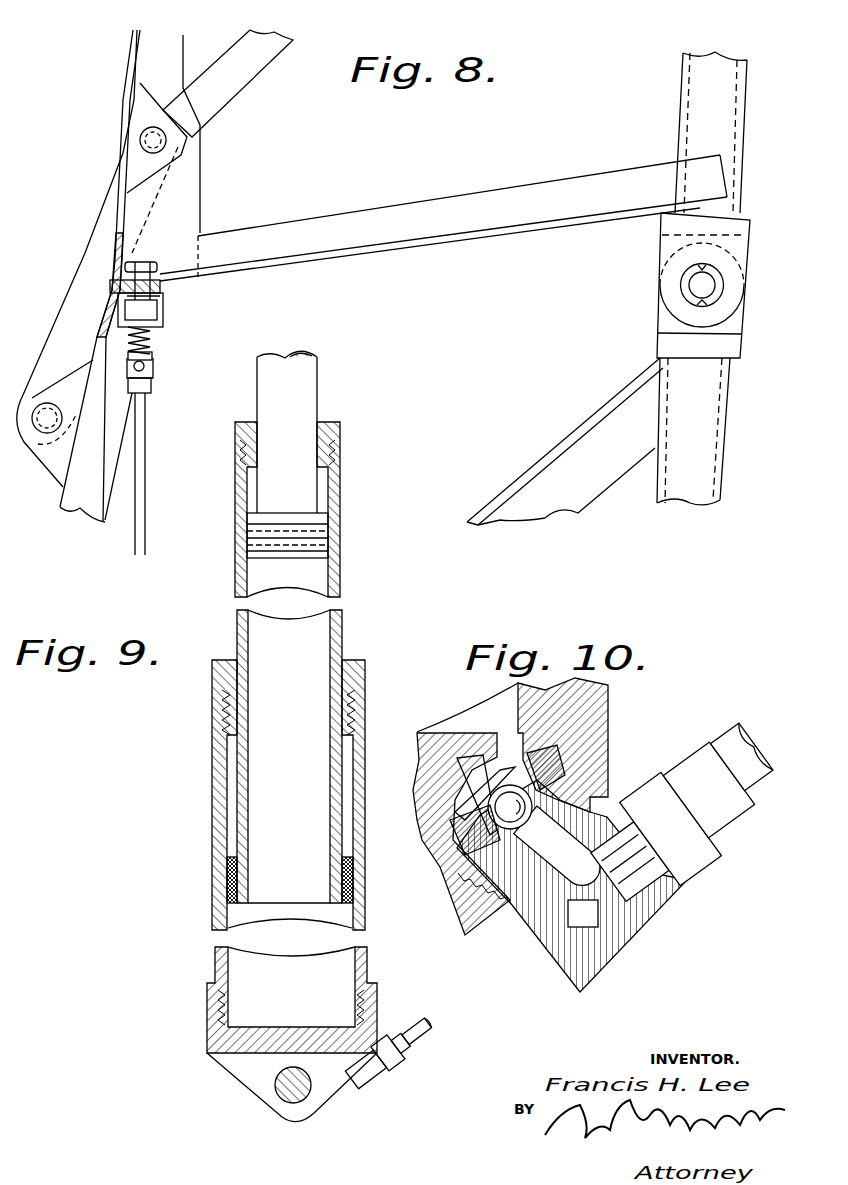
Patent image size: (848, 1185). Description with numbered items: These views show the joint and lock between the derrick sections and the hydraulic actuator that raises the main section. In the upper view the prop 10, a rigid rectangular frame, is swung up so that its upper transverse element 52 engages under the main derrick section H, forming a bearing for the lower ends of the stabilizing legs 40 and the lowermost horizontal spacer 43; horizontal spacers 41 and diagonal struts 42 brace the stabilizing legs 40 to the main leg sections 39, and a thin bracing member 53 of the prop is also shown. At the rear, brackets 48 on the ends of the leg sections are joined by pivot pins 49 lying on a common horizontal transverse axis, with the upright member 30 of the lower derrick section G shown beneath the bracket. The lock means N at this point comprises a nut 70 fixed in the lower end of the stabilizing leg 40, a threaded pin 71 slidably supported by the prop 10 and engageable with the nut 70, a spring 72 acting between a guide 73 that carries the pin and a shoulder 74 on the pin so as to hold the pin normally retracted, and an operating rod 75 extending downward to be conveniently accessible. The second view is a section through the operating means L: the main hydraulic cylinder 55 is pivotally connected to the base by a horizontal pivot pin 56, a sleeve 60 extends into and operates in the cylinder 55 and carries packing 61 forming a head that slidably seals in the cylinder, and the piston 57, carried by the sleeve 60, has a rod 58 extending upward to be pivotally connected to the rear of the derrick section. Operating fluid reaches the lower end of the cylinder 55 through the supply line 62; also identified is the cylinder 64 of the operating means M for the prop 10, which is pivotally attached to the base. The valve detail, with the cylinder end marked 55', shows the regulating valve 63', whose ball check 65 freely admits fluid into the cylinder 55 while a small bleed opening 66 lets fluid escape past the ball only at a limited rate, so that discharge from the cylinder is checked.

In FIG. 8, the prop 10 is at (82, 513).
In FIG. 8, the upright post 30 is at (707, 468).
In FIG. 8, the main leg sections 39 is at (680, 140).
In FIG. 8, the stabilizing legs 40 is at (145, 63).
In FIG. 8, the horizontal spacers 41 is at (397, 210).
In FIG. 8, the diagonal struts 42 is at (237, 85).
In FIG. 8, the lowermost horizontal spacer 43 is at (120, 243).
In FIG. 8, the brackets 48 is at (657, 342).
In FIG. 8, the pivot pins 49 is at (692, 289).
In FIG. 8, the upper transverse element 52 is at (100, 317).
In FIG. 8, the tie rod 53 is at (80, 293).
In FIG. 8, the nut 70 is at (157, 268).
In FIG. 8, the threaded pins 71 is at (143, 312).
In FIG. 8, the springs 72 is at (150, 334).
In FIG. 8, the guides 73 is at (160, 293).
In FIG. 8, the shoulders 74 is at (150, 357).
In FIG. 8, the rods 75 is at (145, 523).
In FIG. 9, the main hydraulic cylinder 55 is at (256, 795).
In FIG. 10, the cylinder body (section) 55' is at (543, 745).
In FIG. 9, the pivot pin 56 is at (293, 1103).
In FIG. 9, the piston 57 is at (300, 520).
In FIG. 9, the rod 58 is at (307, 383).
In FIG. 9, the sleeve 60 is at (343, 635).
In FIG. 9, the packing 61 is at (233, 883).
In FIG. 9, the supply line 62 is at (420, 1023).
In FIG. 10, the supply line 62 is at (723, 737).
In FIG. 10, the regulating valve 63' is at (572, 892).
In FIG. 9, the cylinder 64 is at (367, 1097).
In FIG. 10, the ball check 65 is at (495, 805).
In FIG. 10, the bleed opening 66 is at (497, 855).